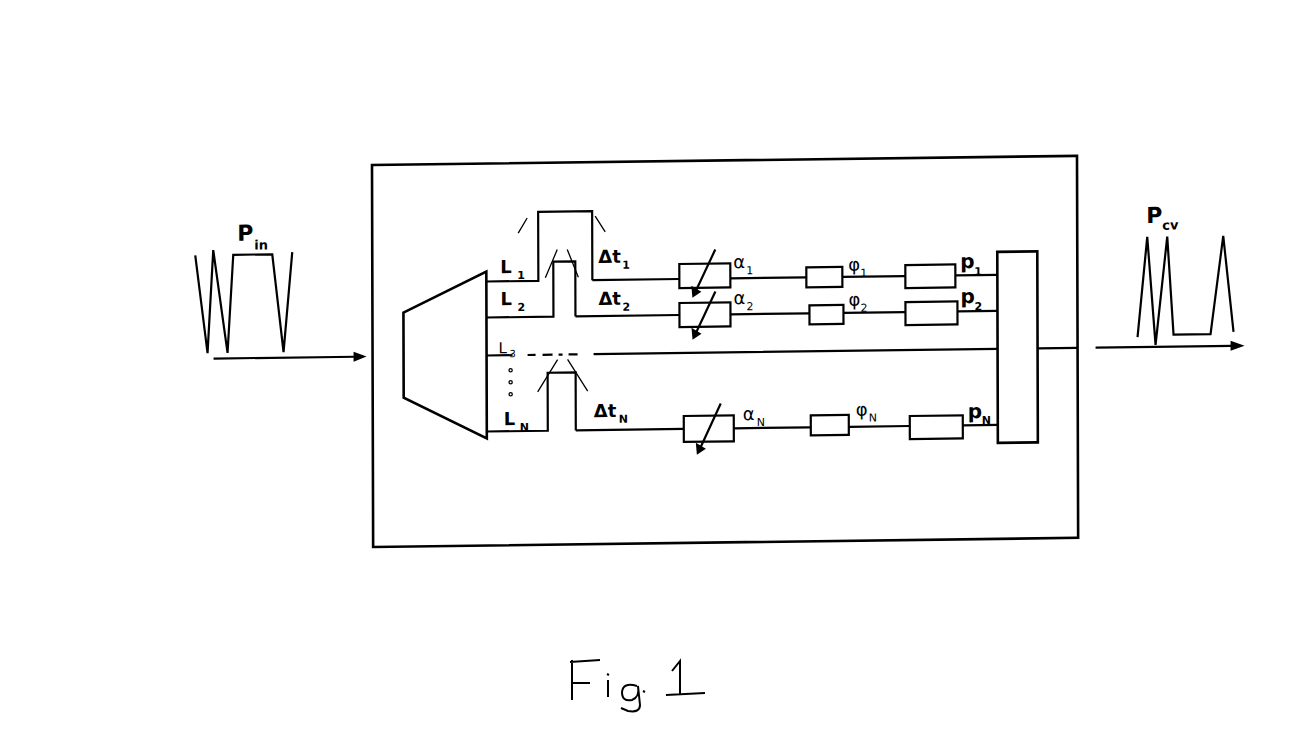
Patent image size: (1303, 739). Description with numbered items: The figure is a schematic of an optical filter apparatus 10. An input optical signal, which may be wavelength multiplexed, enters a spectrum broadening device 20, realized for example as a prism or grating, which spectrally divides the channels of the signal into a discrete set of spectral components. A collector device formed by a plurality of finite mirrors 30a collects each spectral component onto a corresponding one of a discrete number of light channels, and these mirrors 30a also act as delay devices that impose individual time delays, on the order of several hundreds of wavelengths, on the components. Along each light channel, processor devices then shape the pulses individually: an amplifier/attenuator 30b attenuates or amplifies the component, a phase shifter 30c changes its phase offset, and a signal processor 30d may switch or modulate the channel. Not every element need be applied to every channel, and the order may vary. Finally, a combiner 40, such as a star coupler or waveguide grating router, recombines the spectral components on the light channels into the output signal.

The optical filter apparatus 10 is at (453, 93).
The spectrum broadening device 20 is at (443, 309).
The finite mirrors / delay devices 30a is at (512, 207).
The amplifier/attenuator 30b is at (672, 262).
The phase shifter 30c is at (798, 252).
The signal processor 30d is at (900, 270).
The combiner 40 is at (1013, 263).